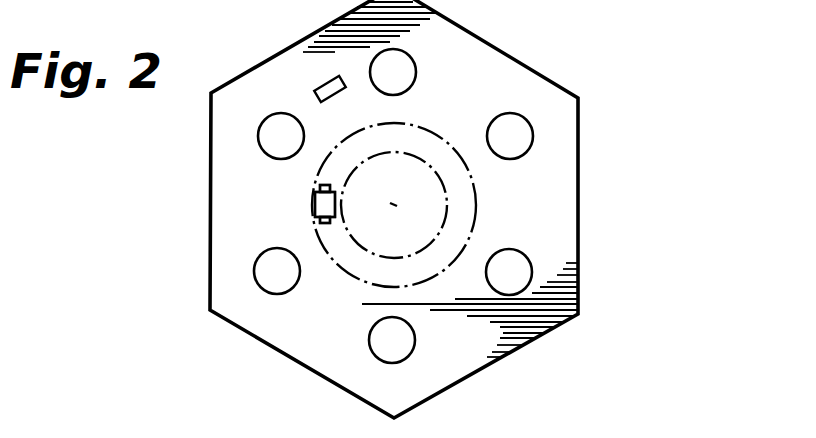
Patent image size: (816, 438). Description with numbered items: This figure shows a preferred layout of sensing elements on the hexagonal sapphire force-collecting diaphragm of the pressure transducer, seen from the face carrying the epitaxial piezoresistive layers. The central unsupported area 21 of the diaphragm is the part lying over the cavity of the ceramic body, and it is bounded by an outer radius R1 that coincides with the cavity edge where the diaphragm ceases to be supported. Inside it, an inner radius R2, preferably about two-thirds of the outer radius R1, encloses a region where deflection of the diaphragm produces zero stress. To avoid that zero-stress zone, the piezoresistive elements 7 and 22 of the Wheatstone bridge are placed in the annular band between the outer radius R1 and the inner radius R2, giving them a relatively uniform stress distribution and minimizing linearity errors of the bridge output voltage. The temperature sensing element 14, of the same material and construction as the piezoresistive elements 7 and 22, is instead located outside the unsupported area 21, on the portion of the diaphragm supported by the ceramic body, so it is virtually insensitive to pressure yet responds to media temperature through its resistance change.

The temperature sensing element 14 is at (321, 80).
The unsupported area 21 is at (433, 135).
The piezoresistive element 7 is at (315, 210).
The piezoresistive element 22 is at (325, 204).
The outer radius R1 is at (394, 205).
The inner radius R2 is at (394, 205).